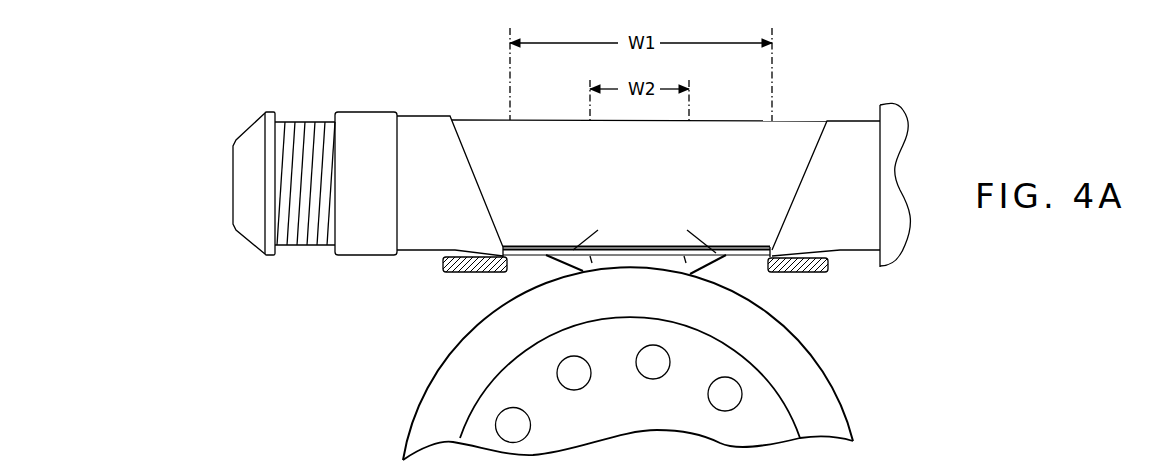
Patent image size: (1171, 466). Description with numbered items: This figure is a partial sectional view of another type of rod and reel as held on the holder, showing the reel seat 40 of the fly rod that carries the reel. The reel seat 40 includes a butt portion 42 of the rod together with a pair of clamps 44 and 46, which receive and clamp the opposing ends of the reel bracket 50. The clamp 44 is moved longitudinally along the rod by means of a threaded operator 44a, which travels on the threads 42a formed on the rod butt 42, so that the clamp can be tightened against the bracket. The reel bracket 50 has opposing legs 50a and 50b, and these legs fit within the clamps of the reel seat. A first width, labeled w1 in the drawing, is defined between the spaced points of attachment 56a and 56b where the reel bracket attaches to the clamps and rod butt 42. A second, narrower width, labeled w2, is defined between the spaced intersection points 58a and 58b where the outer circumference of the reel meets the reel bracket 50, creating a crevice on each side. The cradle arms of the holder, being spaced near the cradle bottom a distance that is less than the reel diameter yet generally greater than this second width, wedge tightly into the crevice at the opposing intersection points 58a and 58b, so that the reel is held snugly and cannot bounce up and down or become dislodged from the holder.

The reel seat 40 is at (692, 150).
The butt portion 42 is at (639, 203).
The threads 42a is at (230, 221).
The clamp 44 is at (450, 186).
The threaded operator 44a is at (336, 183).
The clamp 46 is at (826, 188).
The reel bracket 50 is at (687, 358).
The bracket leg 50a is at (449, 281).
The bracket leg 50b is at (841, 325).
The point of attachment 56a is at (582, 193).
The point of attachment 56b is at (698, 215).
The intersection point 58a is at (485, 288).
The intersection point 58b is at (806, 285).